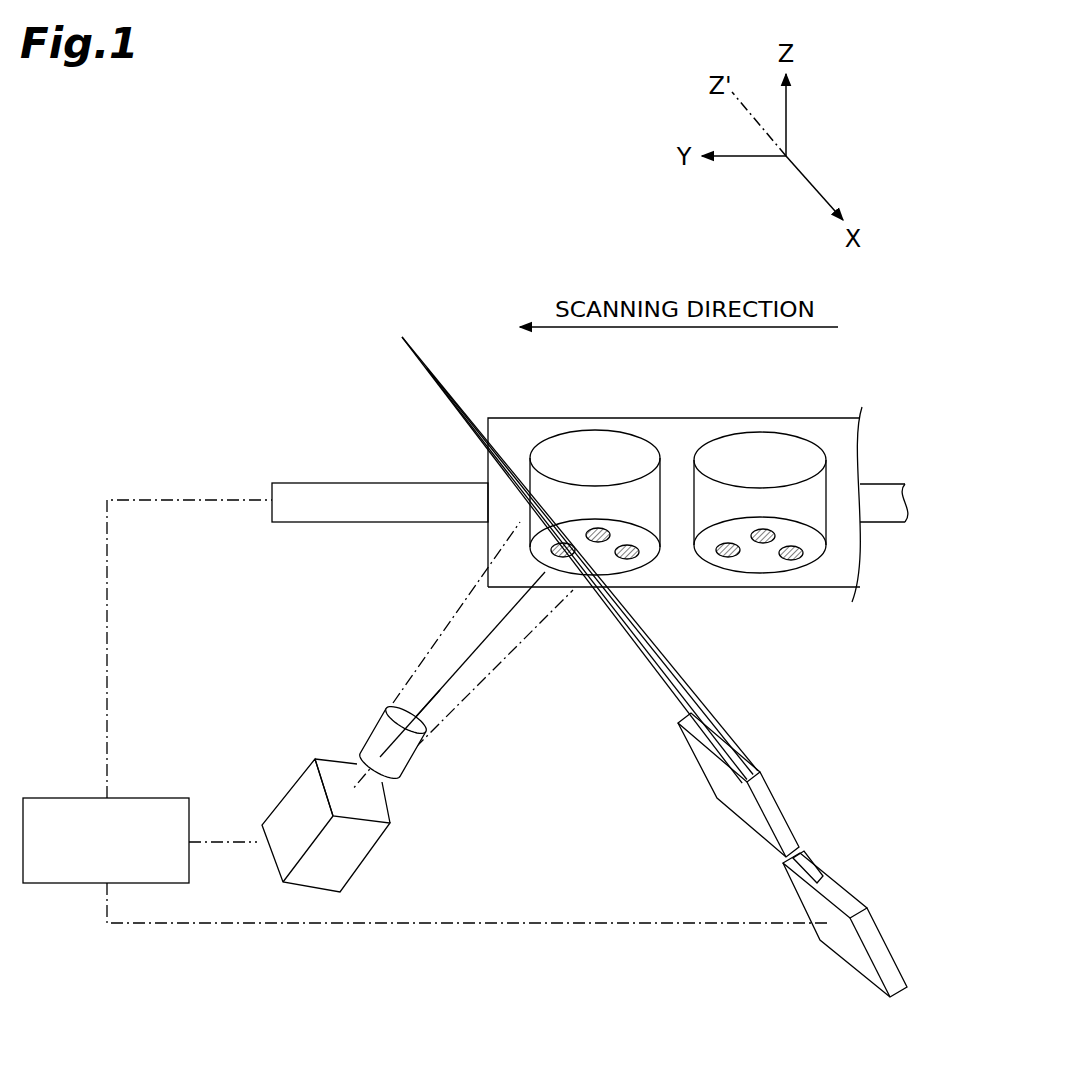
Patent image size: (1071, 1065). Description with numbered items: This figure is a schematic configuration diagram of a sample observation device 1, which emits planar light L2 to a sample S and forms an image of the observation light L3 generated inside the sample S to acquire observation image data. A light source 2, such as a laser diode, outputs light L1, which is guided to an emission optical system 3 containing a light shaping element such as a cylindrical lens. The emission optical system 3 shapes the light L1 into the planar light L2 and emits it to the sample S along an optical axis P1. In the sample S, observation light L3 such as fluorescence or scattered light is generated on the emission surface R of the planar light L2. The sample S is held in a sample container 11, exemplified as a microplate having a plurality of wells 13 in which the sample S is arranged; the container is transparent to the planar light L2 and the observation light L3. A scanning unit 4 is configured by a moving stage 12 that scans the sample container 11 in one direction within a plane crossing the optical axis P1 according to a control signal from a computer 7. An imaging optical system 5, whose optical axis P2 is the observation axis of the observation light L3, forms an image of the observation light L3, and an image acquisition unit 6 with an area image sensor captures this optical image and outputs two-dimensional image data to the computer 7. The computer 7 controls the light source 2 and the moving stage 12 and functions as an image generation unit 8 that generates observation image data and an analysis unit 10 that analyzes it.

The sample observation device 1 is at (160, 342).
The light source 2 is at (853, 893).
The emission optical system 3 is at (768, 786).
The scanning unit 4 is at (387, 403).
The imaging optical system 5 is at (377, 712).
The image acquisition unit 6 is at (292, 780).
The computer 7 is at (50, 798).
The image generation unit 8 is at (98, 798).
The analysis unit 10 is at (98, 798).
The sample container 11 is at (530, 417).
The moving stage 12 is at (335, 483).
The wells 13 is at (637, 452).
The sample S is at (630, 557).
The optical axis of the emission optical system P1 is at (411, 350).
The optical axis of the imaging optical system P2 is at (487, 633).
The emission surface R is at (517, 527).
The light L1 is at (812, 868).
The planar light L2 is at (690, 692).
The observation light L3 is at (447, 626).